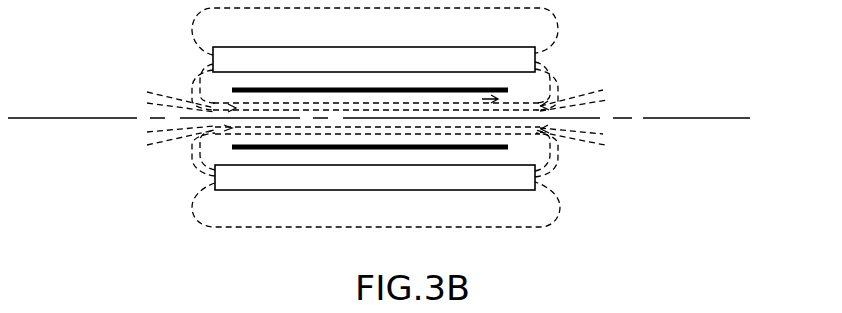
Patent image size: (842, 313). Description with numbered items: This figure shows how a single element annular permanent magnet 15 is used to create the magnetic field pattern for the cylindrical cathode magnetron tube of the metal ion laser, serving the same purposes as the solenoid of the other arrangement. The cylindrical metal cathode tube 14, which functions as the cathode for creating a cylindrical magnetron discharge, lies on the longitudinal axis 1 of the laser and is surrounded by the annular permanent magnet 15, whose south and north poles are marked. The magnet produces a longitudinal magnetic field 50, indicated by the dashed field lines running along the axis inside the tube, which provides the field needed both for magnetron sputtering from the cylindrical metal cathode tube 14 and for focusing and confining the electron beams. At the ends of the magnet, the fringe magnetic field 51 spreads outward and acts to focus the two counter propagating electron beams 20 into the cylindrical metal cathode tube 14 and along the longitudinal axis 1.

The longitudinal axis 1 is at (680, 118).
The cylindrical metal cathode tube 14 is at (282, 150).
The single element annular permanent magnet 15 is at (367, 178).
The counter propagating electron beams 20 is at (152, 133).
The longitudinal magnetic field 50 is at (522, 133).
The fringe magnetic field 51 is at (192, 148).